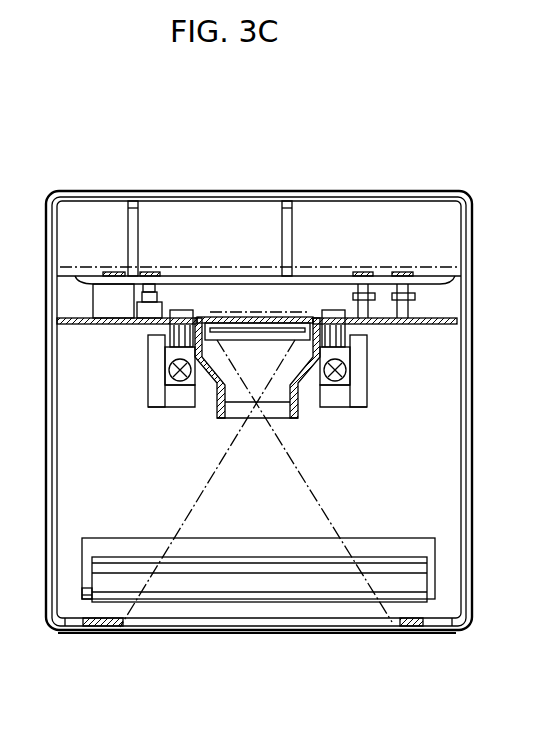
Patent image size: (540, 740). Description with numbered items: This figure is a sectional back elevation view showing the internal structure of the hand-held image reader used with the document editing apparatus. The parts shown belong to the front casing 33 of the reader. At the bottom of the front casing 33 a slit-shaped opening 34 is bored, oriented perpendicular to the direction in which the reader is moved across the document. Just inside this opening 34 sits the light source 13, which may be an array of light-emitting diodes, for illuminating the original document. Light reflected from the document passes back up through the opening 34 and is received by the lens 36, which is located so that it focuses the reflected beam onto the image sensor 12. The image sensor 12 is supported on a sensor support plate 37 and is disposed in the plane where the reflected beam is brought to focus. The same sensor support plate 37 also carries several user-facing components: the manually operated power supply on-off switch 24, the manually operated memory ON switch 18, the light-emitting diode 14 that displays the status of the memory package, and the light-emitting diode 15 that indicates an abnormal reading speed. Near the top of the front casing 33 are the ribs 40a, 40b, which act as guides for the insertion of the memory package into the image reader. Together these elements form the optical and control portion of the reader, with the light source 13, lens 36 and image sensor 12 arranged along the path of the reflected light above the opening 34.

The front casing 33 is at (57, 191).
The opening 34 is at (356, 622).
The rib 40a is at (134, 228).
The rib 40b is at (292, 233).
The power supply on-off switch 24 is at (107, 272).
The memory ON switch 18 is at (159, 276).
The sensor support plate 37 is at (440, 313).
The light-emitting diode 14 is at (362, 268).
The light-emitting diode 15 is at (402, 268).
The image sensor 12 is at (297, 337).
The lens 36 is at (275, 388).
The light source 13 is at (415, 583).